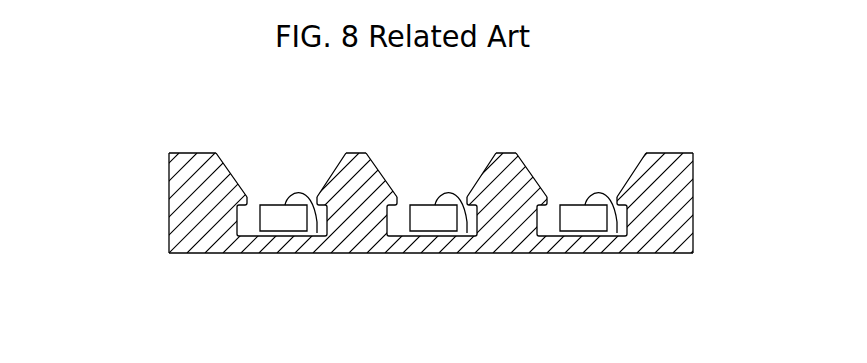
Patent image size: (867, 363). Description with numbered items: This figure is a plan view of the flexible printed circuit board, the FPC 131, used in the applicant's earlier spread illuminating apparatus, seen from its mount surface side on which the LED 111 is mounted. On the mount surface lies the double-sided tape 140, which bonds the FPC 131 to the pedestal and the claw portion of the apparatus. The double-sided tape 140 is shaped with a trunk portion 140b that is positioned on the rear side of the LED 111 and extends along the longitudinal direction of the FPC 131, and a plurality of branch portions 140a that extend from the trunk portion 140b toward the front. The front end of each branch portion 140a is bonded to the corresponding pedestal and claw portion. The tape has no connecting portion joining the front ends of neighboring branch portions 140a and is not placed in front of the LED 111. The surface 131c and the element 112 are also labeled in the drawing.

The flexible printed circuit board (FPC) 131 is at (155, 178).
The top surface of package body 131c is at (437, 152).
The double-sided tape 140 is at (668, 205).
The branch portion 140a is at (191, 177).
The trunk portion 140b is at (584, 237).
The LED 111 is at (281, 223).
The wire 112 is at (630, 287).